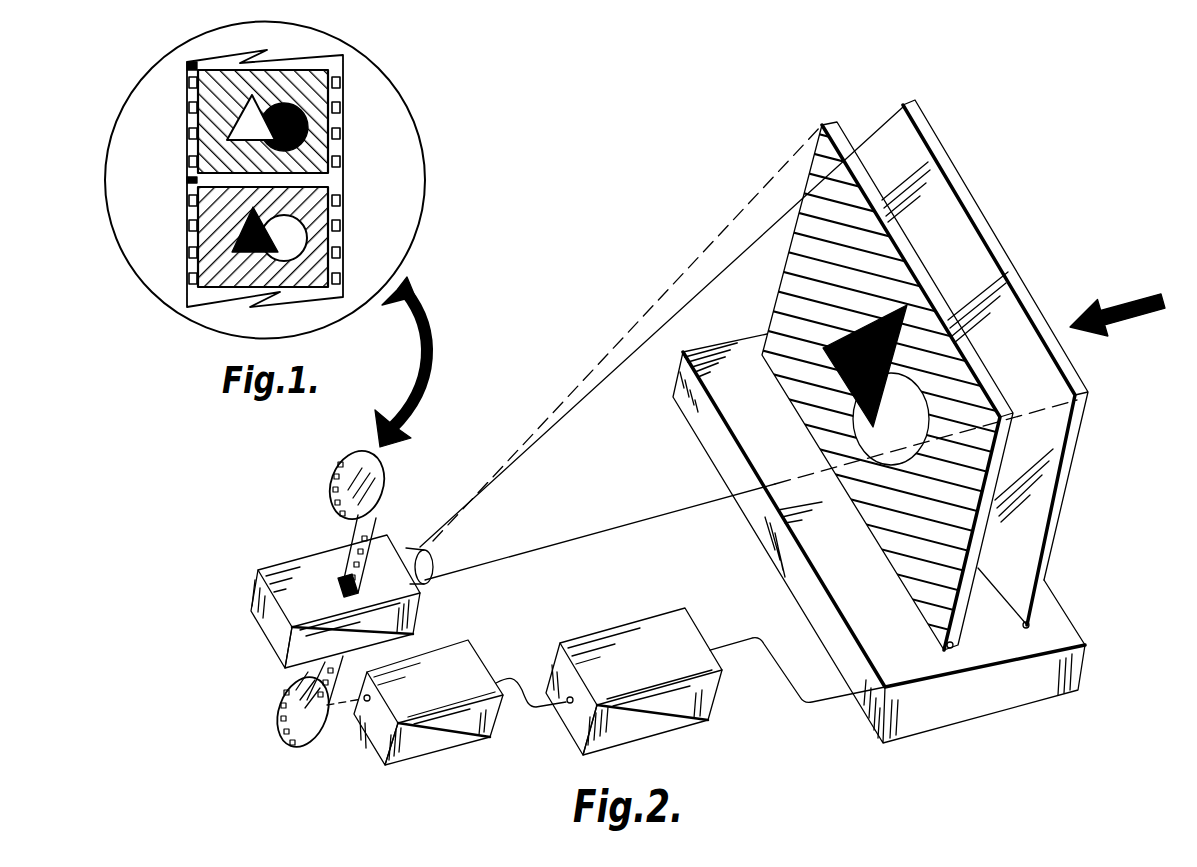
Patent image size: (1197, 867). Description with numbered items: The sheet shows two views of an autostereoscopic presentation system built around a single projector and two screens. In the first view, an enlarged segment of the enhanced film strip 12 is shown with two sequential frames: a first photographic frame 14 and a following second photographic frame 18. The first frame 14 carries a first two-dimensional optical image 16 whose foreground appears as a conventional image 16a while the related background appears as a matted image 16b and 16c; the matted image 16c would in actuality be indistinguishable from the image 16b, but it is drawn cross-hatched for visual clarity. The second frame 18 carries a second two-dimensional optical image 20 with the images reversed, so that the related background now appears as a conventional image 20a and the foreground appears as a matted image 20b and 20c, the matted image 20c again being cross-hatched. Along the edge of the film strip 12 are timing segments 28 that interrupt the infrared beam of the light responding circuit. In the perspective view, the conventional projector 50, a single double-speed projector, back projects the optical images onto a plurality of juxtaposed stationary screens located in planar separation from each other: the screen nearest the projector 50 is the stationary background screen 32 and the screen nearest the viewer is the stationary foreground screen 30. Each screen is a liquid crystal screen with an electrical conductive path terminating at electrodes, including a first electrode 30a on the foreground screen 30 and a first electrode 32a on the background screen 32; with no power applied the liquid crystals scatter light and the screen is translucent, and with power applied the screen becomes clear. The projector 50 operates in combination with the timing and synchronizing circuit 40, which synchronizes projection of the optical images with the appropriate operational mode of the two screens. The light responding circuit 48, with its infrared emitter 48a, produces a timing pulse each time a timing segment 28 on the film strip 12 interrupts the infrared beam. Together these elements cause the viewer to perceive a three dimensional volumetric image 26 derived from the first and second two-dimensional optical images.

In FIG. 1, the enhanced film strip 12 is at (333, 63).
In FIG. 2, the enhanced film strip 12 is at (290, 692).
In FIG. 1, the first photographic frame 14 is at (190, 100).
In FIG. 1, the first two-dimensional optical image 16 is at (266, 128).
In FIG. 1, the conventional image 16a is at (217, 137).
In FIG. 1, the matted image 16b is at (303, 123).
In FIG. 1, the matted image 16c is at (317, 153).
In FIG. 1, the second photographic frame 18 is at (187, 207).
In FIG. 1, the second two-dimensional optical image 20 is at (264, 253).
In FIG. 1, the conventional image 20a is at (293, 237).
In FIG. 1, the matted image 20b is at (193, 243).
In FIG. 1, the matted image 20c is at (200, 280).
In FIG. 2, the perceived three dimensional volumetric image 26 is at (807, 310).
In FIG. 1, the timing segment 28 is at (188, 66).
In FIG. 2, the stationary foreground screen 30 is at (1017, 364).
In FIG. 2, the first electrode 30a is at (1031, 625).
In FIG. 2, the stationary background screen 32 is at (890, 382).
In FIG. 2, the first electrode 32a is at (1005, 668).
In FIG. 2, the timing and synchronizing circuit 40 is at (665, 717).
In FIG. 2, the light responding circuit 48 is at (391, 709).
In FIG. 2, the infrared emitter 48a is at (367, 698).
In FIG. 2, the conventional projector 50 is at (268, 603).